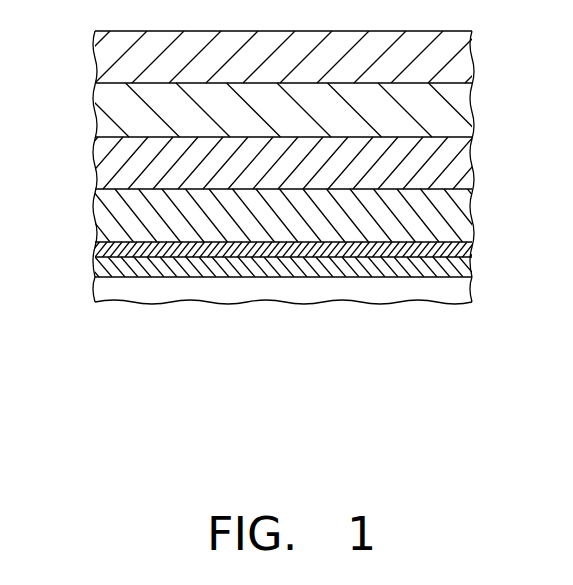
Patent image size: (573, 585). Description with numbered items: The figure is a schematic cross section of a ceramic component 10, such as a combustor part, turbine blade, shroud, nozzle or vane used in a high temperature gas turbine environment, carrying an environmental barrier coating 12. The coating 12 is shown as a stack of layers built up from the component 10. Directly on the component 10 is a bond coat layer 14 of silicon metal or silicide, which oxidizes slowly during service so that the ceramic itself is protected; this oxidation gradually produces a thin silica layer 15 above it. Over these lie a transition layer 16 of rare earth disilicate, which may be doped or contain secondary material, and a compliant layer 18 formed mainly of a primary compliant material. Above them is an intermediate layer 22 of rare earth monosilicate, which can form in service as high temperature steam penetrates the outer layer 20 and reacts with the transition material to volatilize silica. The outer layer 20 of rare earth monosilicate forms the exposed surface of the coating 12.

The component 10 is at (177, 289).
The environmental barrier coating 12 is at (77, 31).
The bond coat layer 14 is at (453, 263).
The silica layer 15 is at (465, 252).
The transition layer 16 is at (440, 220).
The compliant layer 18 is at (455, 163).
The outer layer 20 is at (462, 62).
The intermediate layer 22 is at (437, 115).